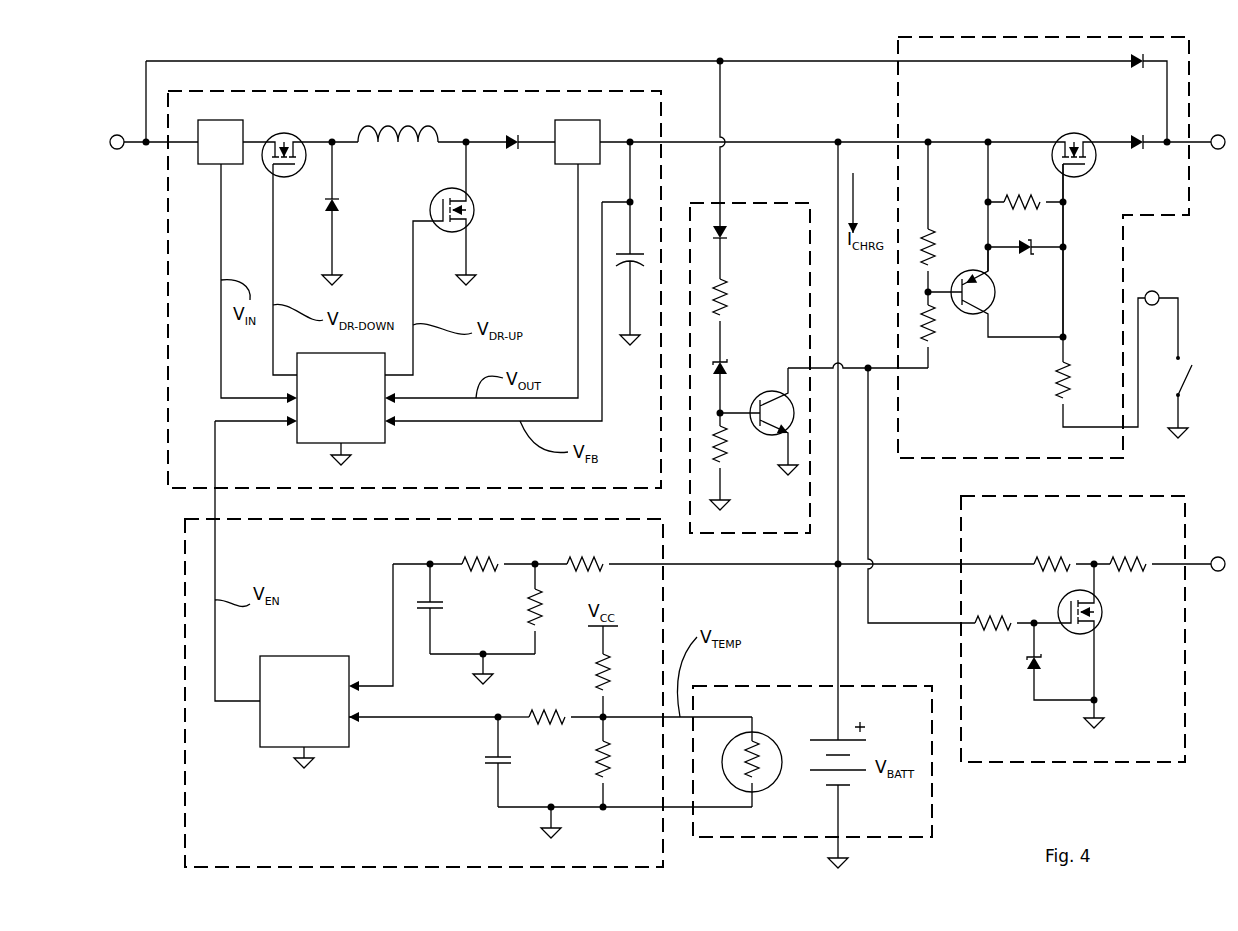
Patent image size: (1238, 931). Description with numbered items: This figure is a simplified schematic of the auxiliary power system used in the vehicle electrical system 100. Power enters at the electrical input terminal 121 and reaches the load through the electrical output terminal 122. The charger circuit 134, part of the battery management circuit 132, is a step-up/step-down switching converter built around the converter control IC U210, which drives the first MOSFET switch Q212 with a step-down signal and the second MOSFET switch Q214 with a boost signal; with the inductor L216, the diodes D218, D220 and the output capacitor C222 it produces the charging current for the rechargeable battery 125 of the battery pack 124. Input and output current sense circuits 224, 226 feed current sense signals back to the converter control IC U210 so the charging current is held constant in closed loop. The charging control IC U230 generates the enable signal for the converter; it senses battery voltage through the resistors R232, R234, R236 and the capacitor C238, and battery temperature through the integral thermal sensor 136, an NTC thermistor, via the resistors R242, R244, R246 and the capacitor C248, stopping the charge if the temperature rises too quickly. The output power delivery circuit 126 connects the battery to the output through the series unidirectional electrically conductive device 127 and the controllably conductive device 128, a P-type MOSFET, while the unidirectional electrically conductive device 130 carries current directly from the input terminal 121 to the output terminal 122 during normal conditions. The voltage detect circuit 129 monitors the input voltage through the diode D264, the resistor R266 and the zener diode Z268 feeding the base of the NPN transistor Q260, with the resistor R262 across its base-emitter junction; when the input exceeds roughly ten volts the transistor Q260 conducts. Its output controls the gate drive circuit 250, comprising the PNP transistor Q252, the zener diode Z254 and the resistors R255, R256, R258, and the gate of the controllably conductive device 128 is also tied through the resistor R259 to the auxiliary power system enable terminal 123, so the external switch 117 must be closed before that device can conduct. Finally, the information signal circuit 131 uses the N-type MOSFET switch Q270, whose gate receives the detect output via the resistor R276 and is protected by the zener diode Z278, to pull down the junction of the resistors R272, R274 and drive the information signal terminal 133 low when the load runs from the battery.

The vehicle electrical system 100 is at (1188, 797).
The external switch 117 is at (1198, 372).
The electrical input terminal 121 is at (122, 150).
The electrical output terminal 122 is at (1218, 150).
The auxiliary power system enable terminal 123 is at (1160, 297).
The battery pack 124 is at (775, 686).
The rechargeable auxiliary battery 125 is at (862, 770).
The output power delivery circuit 126 is at (955, 460).
The unidirectional electrically conductive device 127 is at (1137, 150).
The controllably conductive device 128 is at (1080, 178).
The voltage detect circuit 129 is at (792, 203).
The unidirectional electrically conductive device 130 is at (1133, 68).
The information signal circuit 131 is at (961, 650).
The battery management circuit 132 is at (185, 797).
The information signal terminal 133 is at (1218, 572).
The charger circuit 134 is at (168, 432).
The integral thermal sensor 136 is at (768, 785).
The input current sense circuit 224 is at (229, 166).
The output current sense circuit 226 is at (566, 166).
The gate drive circuit 250 is at (1084, 292).
The converter control integrated circuit U210 is at (390, 433).
The charging control IC U230 is at (312, 656).
The first MOSFET switch Q212 is at (290, 178).
The second MOSFET switch Q214 is at (468, 232).
The inductor L216 is at (407, 166).
The diode D218 is at (340, 207).
The diode D220 is at (512, 150).
The output capacitor C222 is at (640, 263).
The resistor R232 is at (592, 556).
The resistor R234 is at (528, 618).
The resistor R236 is at (478, 556).
The capacitor C238 is at (423, 610).
The resistor R242 is at (597, 668).
The resistor R244 is at (598, 775).
The resistor R246 is at (545, 725).
The capacitor C248 is at (487, 770).
The PNP bipolar junction transistor Q252 is at (963, 315).
The zener diode Z254 is at (1025, 252).
The resistor R255 is at (1022, 196).
The resistor R256 is at (937, 247).
The resistor R258 is at (937, 346).
The resistor R259 is at (1058, 382).
The NPN bipolar junction transistor Q260 is at (752, 425).
The resistor R262 is at (728, 470).
The diode D264 is at (728, 233).
The resistor R266 is at (730, 308).
The zener diode Z268 is at (728, 372).
The N-type MOSFET switch Q270 is at (1102, 610).
The resistor R272 is at (1065, 556).
The resistor R274 is at (1140, 556).
The resistor R276 is at (996, 614).
The zener diode Z278 is at (1027, 660).